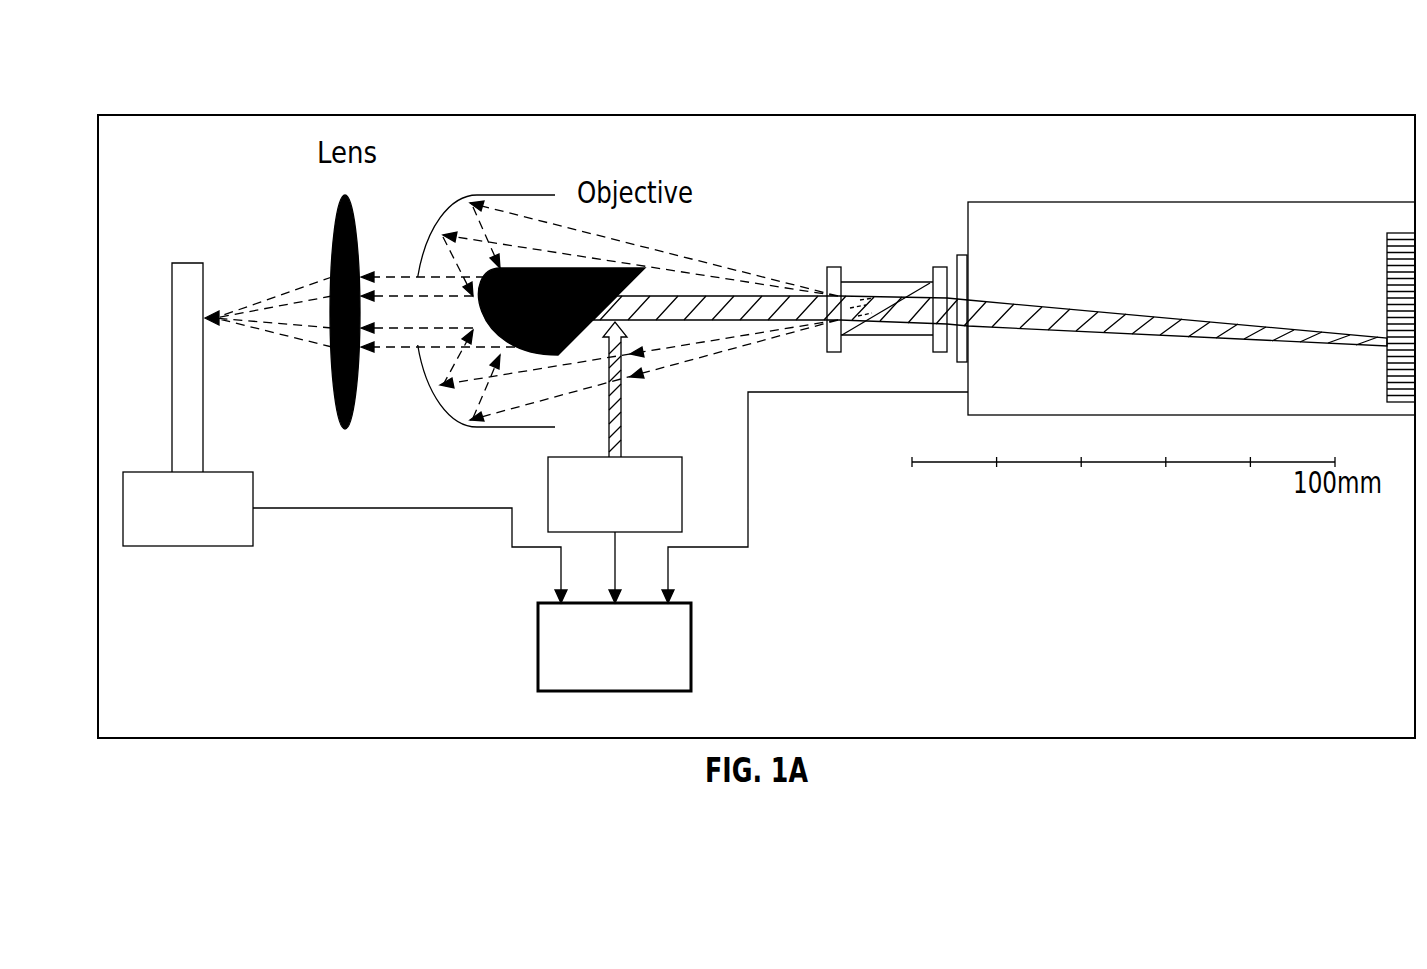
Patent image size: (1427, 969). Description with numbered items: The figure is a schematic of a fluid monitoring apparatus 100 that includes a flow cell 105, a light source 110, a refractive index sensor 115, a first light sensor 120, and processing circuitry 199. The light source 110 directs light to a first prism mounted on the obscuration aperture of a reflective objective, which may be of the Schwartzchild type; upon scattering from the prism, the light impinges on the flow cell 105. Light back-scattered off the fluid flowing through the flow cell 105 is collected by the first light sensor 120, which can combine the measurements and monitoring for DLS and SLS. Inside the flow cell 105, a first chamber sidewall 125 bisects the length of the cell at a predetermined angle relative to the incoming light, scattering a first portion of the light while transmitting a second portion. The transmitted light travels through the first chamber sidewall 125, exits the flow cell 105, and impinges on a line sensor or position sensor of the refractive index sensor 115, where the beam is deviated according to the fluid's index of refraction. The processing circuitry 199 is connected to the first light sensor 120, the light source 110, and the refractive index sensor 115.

The fluid monitoring apparatus 100 is at (134, 67).
The first light sensor 120 is at (192, 263).
The light source 110 is at (637, 508).
The flow cell 105 is at (847, 255).
The first chamber sidewall 125 is at (925, 283).
The refractive index sensor 115 is at (1055, 202).
The processing circuitry 199 is at (538, 648).